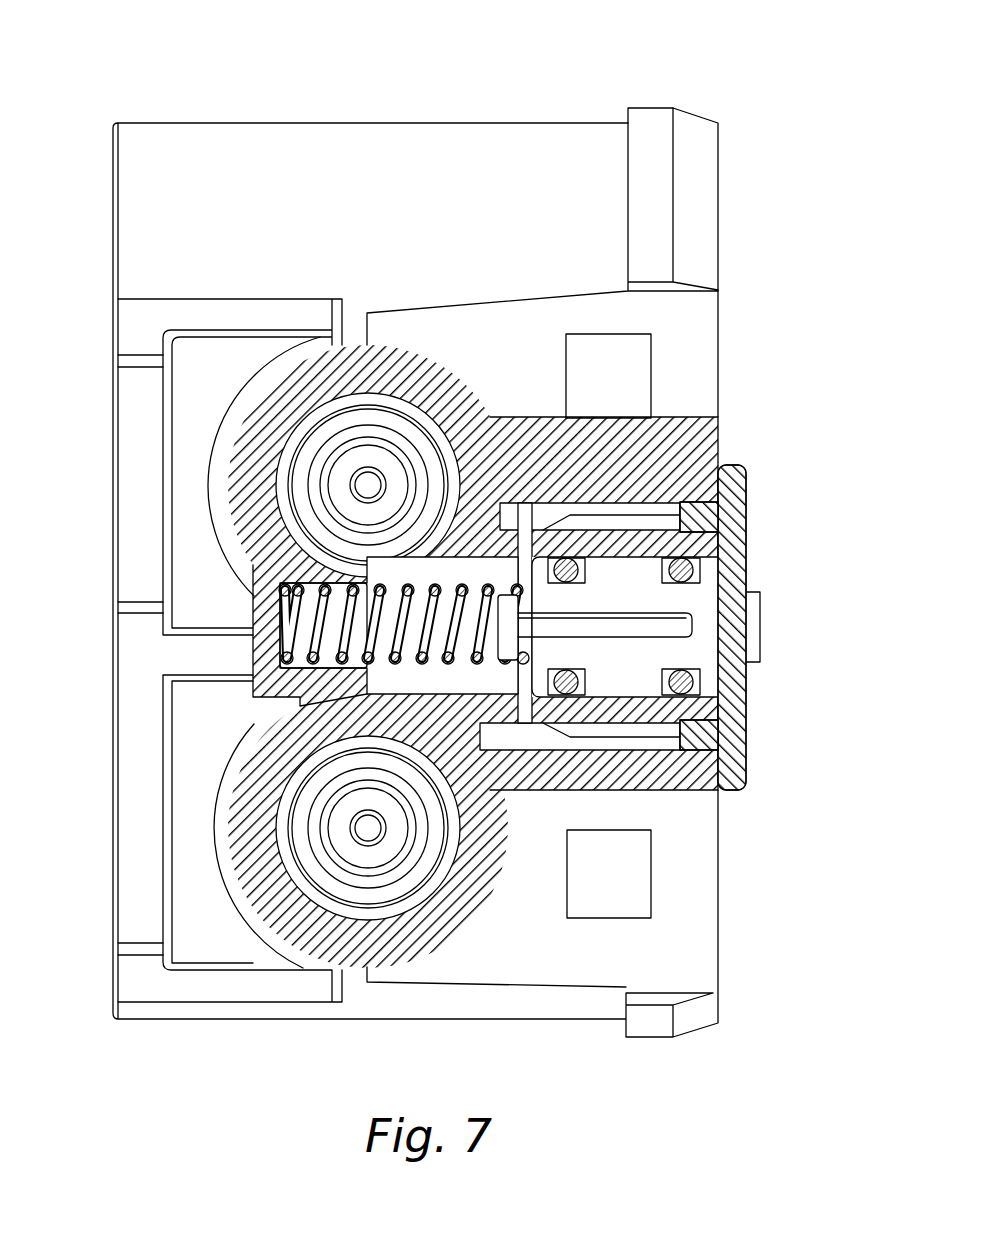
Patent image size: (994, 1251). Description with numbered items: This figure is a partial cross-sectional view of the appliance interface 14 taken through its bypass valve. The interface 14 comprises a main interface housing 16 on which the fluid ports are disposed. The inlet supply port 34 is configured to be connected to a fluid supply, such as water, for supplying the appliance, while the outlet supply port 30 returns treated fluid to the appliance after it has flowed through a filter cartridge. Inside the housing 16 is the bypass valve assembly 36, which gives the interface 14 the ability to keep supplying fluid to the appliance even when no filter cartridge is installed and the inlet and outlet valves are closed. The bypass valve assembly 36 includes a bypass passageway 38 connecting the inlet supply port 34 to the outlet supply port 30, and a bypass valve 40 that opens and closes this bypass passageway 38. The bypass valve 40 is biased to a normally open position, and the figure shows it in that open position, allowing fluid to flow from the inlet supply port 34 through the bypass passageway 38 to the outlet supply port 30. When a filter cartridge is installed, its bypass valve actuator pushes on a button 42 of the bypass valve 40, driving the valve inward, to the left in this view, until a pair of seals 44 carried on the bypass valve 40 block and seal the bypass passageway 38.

The appliance interface 14 is at (521, 55).
The main interface housing 16 is at (304, 120).
The outlet supply port 30 is at (312, 373).
The inlet supply port 34 is at (323, 932).
The bypass valve assembly 36 is at (704, 722).
The bypass passageway 38 is at (480, 572).
The bypass valve 40 is at (683, 658).
The button 42 is at (753, 628).
The seals 44 is at (697, 540).